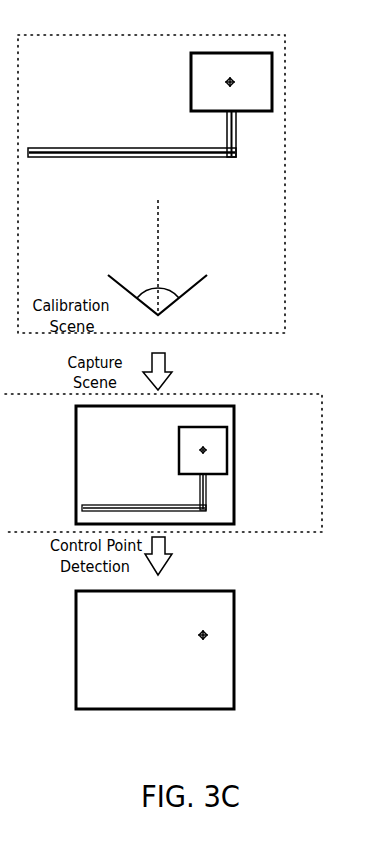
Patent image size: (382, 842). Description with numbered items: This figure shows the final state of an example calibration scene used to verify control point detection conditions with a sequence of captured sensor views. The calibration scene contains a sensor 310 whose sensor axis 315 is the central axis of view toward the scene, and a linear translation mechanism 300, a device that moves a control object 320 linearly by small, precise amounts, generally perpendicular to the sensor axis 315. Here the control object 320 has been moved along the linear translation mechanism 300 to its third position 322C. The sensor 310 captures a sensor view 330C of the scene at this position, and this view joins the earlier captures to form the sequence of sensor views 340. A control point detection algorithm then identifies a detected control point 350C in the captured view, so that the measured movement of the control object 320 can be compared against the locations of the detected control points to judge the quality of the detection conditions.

The linear translation mechanism 300 is at (70, 149).
The sensor 310 is at (200, 296).
The sensor axis 315 is at (167, 237).
The control object 320 is at (191, 67).
The position 322C is at (267, 137).
The sensor view 330C is at (30, 492).
The sequence of sensor views 340 is at (268, 512).
The detected control point 350C is at (138, 768).